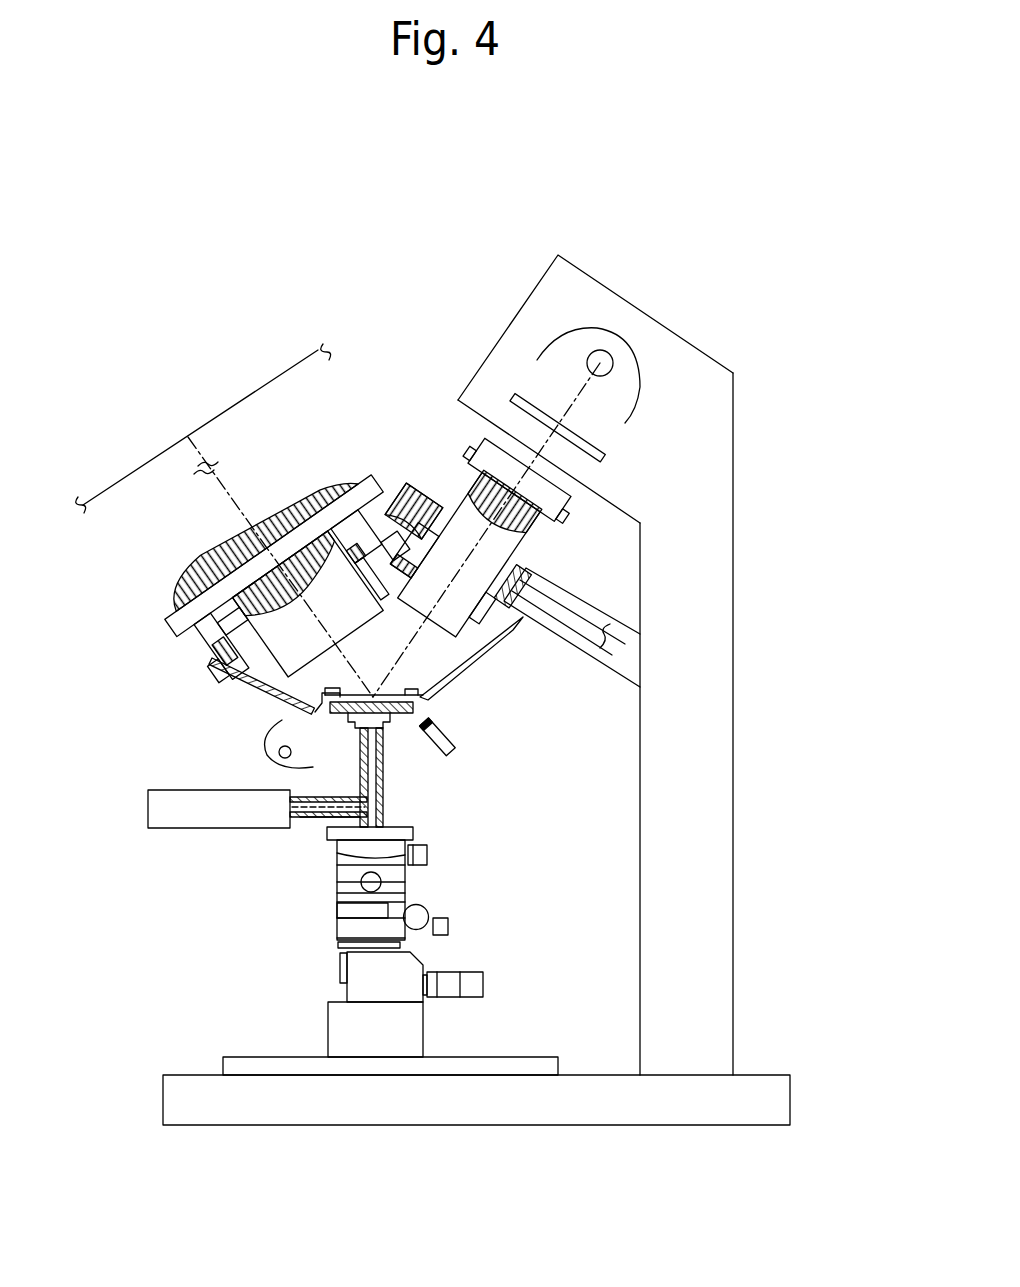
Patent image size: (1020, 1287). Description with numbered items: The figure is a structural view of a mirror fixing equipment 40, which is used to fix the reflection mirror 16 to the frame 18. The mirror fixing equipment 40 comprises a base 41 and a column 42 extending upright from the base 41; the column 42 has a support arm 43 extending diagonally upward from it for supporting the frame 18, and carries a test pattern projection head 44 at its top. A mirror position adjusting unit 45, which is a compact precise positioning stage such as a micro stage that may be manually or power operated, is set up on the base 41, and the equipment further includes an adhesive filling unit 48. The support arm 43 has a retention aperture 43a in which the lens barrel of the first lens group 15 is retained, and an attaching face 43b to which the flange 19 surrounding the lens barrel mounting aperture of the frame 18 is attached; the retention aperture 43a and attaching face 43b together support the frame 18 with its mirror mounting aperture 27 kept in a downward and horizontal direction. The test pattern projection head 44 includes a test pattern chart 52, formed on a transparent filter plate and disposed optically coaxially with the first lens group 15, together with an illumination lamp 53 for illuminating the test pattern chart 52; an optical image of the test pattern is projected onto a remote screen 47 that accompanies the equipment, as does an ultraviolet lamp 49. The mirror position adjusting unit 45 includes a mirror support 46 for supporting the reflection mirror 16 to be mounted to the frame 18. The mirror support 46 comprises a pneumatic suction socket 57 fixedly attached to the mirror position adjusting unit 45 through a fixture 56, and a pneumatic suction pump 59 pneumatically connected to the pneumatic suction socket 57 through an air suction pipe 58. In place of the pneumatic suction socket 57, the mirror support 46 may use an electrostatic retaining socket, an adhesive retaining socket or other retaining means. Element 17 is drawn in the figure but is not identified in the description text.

The mirror fixing equipment 40 is at (483, 603).
The test pattern projection head 44 is at (603, 275).
The first lens group 15 is at (585, 527).
The column 42 is at (733, 800).
The base 41 is at (592, 1078).
The illumination lamp 53 is at (630, 392).
The test pattern chart 52 is at (603, 457).
The remote screen 47 is at (218, 416).
The first lens 17 is at (297, 502).
The flange 19 is at (405, 505).
The frame 18 is at (255, 688).
The support arm 43 is at (605, 615).
The retention aperture 43a is at (530, 580).
The attaching face 43b is at (517, 620).
The mirror mounting aperture 27 is at (416, 714).
The pneumatic suction socket 57 is at (357, 732).
The reflection mirror 16 is at (412, 714).
The air suction pipe 58 is at (360, 787).
The mirror support 46 is at (318, 823).
The adhesive filling unit 48 is at (448, 750).
The pneumatic suction pump 59 is at (148, 810).
The ultraviolet lamp 49 is at (265, 748).
The fixture 56 is at (395, 828).
The mirror position adjusting unit 45 is at (348, 910).